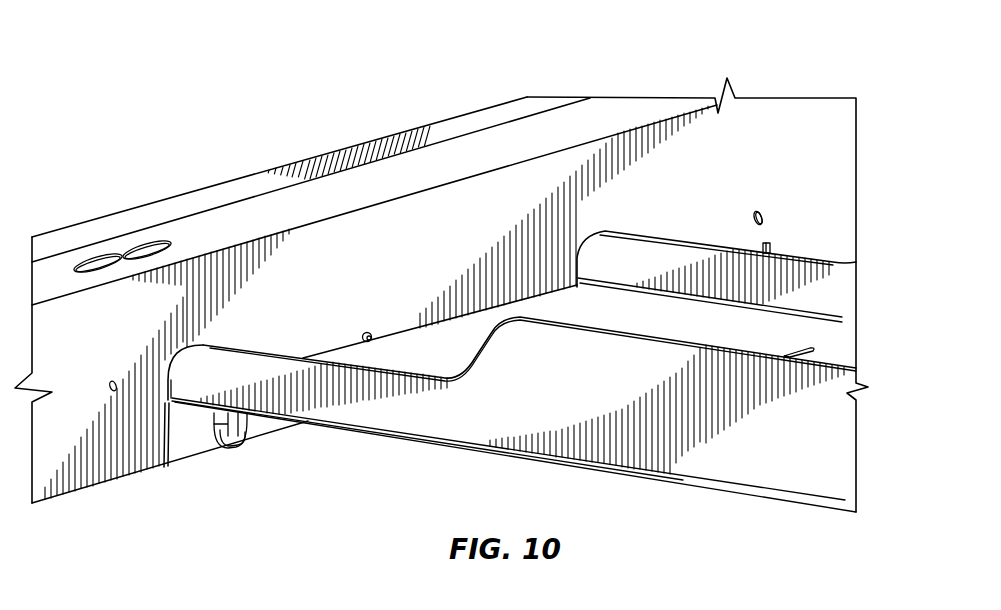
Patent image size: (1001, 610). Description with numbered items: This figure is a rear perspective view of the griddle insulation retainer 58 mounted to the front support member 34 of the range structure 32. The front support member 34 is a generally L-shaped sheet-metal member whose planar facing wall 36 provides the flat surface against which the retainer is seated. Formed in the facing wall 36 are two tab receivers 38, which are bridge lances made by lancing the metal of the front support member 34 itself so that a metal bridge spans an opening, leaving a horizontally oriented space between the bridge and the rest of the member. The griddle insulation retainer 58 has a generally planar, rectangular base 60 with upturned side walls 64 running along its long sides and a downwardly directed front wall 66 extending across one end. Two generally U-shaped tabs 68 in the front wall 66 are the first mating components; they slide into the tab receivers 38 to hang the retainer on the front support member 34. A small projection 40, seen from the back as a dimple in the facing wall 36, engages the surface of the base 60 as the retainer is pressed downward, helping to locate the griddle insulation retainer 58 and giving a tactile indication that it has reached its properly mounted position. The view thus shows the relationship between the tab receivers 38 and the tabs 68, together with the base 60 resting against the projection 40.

The support structure 32 is at (353, 120).
The front support member 34 is at (237, 220).
The planar facing wall 36 is at (505, 207).
The tab receiver 38 is at (213, 418).
The projection 40 is at (366, 332).
The griddle insulation retainer 58 is at (808, 248).
The base 60 is at (787, 335).
The side wall 64 is at (433, 417).
The front wall 66 is at (177, 455).
The tab 68 is at (228, 443).